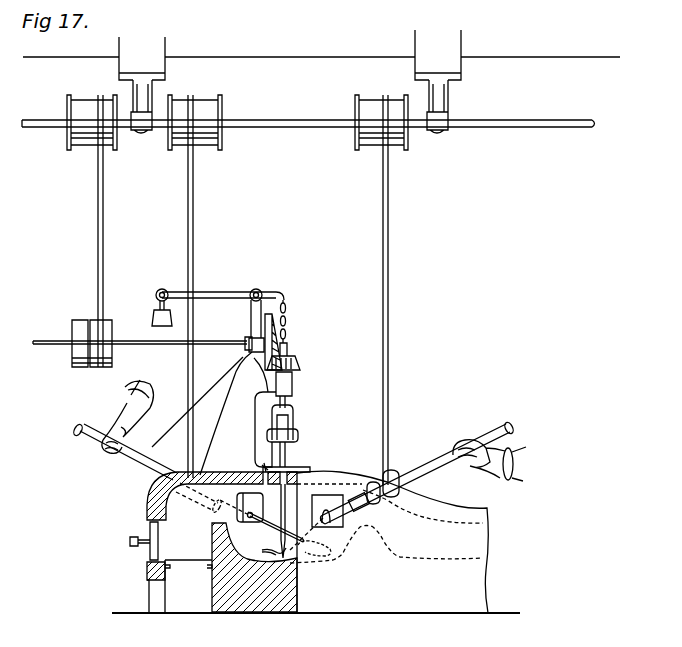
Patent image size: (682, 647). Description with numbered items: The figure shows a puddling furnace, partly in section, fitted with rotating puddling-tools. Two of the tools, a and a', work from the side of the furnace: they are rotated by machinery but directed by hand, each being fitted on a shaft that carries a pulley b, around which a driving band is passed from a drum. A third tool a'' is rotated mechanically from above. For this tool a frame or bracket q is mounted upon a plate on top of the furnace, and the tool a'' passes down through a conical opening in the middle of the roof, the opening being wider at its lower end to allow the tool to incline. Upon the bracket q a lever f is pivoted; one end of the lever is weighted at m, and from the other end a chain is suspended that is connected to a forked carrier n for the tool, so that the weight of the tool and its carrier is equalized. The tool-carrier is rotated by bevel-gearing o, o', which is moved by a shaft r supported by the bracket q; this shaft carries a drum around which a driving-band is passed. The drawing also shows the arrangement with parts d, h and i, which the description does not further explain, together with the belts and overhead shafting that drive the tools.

The tool a is at (167, 486).
The tool a' is at (314, 542).
The tool a'' is at (276, 519).
The pulley b is at (374, 486).
The shaft d is at (418, 472).
The lever f is at (223, 312).
The spindle h is at (286, 500).
The plate i is at (261, 470).
The weight m is at (156, 307).
The forked carrier n is at (288, 419).
The bevel-gearing o is at (273, 334).
The bevel-gearing o' is at (287, 348).
The frame or bracket q is at (214, 413).
The shaft r is at (142, 338).